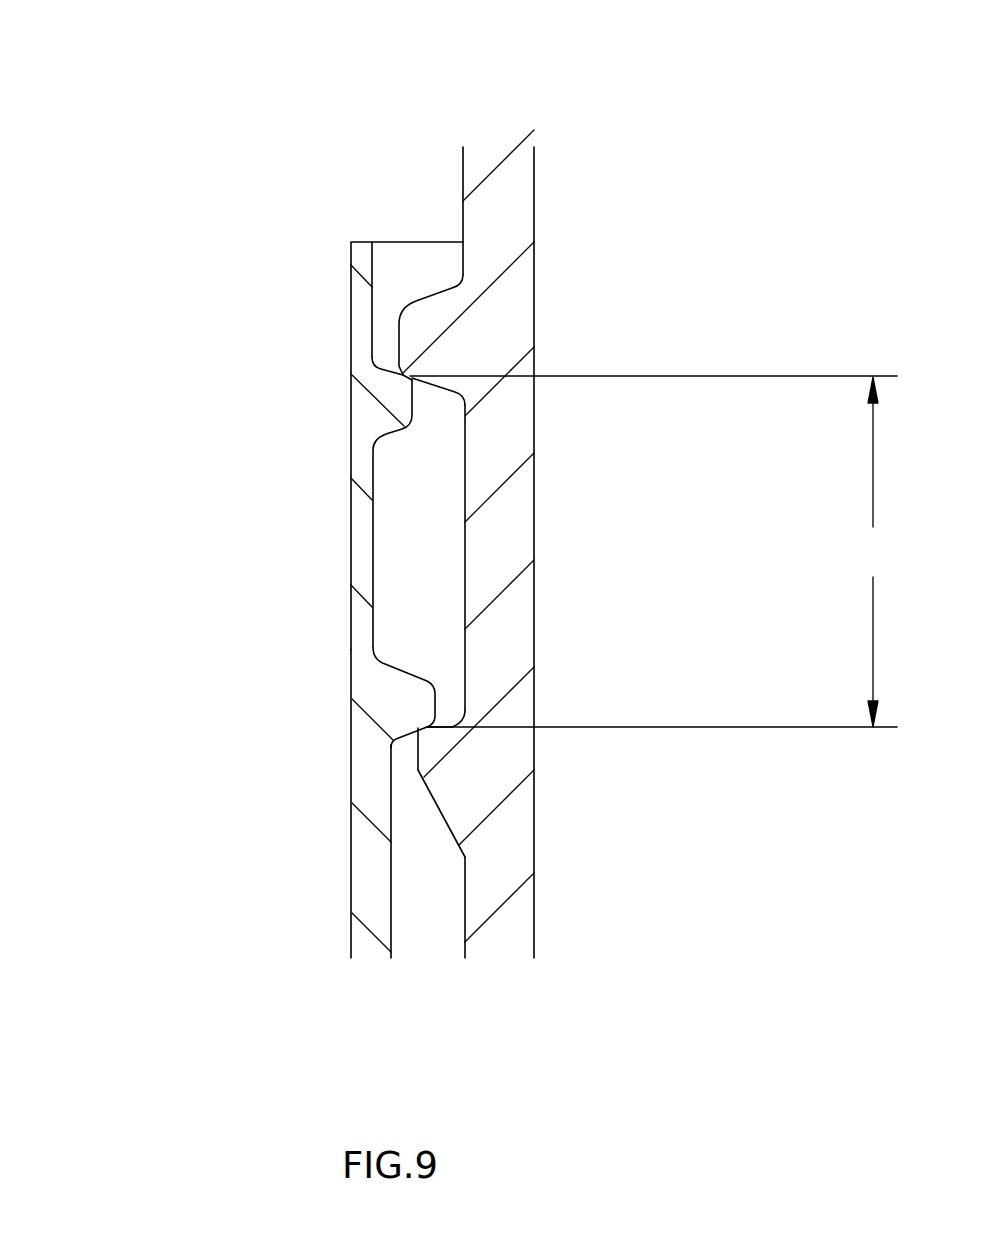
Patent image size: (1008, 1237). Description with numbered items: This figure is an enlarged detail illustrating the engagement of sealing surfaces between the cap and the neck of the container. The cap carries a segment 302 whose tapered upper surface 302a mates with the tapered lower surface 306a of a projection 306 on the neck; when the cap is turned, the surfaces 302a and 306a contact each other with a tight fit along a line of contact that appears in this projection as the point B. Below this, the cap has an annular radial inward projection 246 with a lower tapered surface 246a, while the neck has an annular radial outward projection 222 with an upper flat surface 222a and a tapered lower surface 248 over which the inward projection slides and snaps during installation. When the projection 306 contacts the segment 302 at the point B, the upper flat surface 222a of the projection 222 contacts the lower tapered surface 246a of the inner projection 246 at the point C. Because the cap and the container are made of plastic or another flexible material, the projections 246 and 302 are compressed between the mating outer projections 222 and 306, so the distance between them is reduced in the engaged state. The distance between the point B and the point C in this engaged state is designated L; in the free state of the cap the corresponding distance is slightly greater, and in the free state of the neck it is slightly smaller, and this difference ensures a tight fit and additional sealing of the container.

The segment 302 is at (370, 408).
The tapered upper surface 302a is at (403, 375).
The projection 306 is at (442, 310).
The tapered lower surface 306a is at (405, 377).
The point of contact B is at (403, 375).
The distance L is at (653, 551).
The upper flat surface 222a is at (449, 725).
The annular radial outward projection 222 is at (438, 778).
The tapered lower surface 248 is at (440, 813).
The point of contact C is at (425, 730).
The annular radial inward projection 246 is at (423, 699).
The lower tapered surface 246a is at (410, 737).